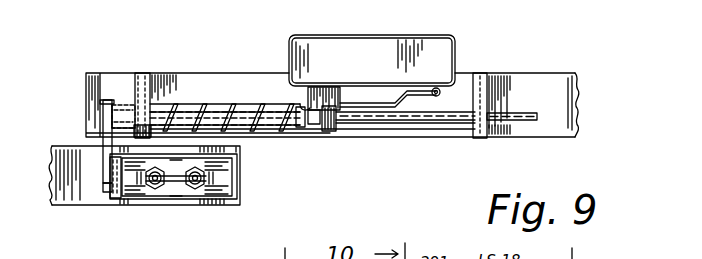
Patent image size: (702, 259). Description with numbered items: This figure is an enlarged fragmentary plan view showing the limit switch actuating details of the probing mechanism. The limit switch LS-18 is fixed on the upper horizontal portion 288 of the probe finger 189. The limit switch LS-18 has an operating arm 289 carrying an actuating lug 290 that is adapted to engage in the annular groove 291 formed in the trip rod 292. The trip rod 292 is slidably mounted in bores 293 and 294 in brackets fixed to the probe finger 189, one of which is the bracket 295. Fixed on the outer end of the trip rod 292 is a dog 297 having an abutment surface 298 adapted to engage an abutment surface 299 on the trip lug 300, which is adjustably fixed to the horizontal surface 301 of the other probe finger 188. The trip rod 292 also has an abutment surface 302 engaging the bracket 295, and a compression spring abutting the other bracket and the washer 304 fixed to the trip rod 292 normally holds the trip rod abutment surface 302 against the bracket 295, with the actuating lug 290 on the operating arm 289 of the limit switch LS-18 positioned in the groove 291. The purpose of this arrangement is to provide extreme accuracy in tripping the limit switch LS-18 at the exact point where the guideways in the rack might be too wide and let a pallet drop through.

The bore 293 is at (143, 78).
The bore 294 is at (148, 96).
The dog 297 is at (108, 164).
The horizontal surface 301 is at (92, 194).
The probe finger 188 is at (82, 207).
The abutment surface 299 is at (106, 194).
The abutment surface 298 is at (120, 180).
The trip lug 300 is at (186, 196).
The washer 304 is at (299, 128).
The annular groove 291 is at (326, 134).
The trip rod 292 is at (390, 124).
The operating arm 289 is at (430, 122).
The actuating lug 290 is at (327, 108).
The limit switch LS-18 is at (435, 54).
The abutment surface 302 is at (483, 108).
The bracket 295 is at (484, 73).
The probe finger 189 is at (553, 77).
The upper horizontal portion 288 is at (560, 100).